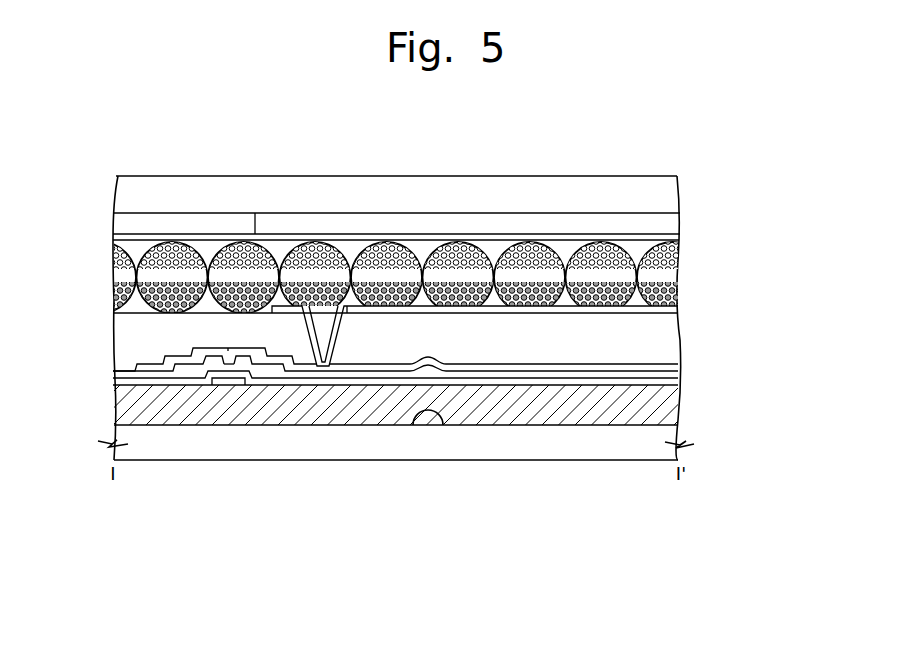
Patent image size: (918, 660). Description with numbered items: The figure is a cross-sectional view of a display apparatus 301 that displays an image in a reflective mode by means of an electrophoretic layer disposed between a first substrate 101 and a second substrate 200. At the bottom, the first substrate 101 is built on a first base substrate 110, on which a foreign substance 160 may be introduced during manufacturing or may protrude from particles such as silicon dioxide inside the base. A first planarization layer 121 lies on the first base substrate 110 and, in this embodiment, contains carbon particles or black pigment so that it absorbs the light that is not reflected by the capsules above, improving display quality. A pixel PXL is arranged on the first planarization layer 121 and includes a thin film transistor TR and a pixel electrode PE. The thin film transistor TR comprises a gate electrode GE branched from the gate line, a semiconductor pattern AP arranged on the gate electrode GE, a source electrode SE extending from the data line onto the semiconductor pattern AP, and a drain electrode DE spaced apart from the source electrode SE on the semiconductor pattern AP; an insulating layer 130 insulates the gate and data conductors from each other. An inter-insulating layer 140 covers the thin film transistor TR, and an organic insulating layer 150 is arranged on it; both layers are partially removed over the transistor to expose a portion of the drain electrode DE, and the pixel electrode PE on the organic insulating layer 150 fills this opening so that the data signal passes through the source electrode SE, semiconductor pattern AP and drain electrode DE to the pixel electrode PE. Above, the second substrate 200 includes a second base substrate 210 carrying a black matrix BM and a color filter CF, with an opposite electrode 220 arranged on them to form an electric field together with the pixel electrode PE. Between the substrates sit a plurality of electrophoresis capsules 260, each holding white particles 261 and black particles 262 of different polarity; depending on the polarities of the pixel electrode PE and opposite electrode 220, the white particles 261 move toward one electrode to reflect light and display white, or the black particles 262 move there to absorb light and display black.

The second base substrate 210 is at (668, 187).
The color filter CF is at (667, 223).
The black matrix BM is at (125, 222).
The opposite electrode 220 is at (668, 238).
The second substrate 200 is at (757, 182).
The electrophoresis capsules 260 is at (757, 257).
The white particles 261 is at (677, 259).
The black particles 262 is at (677, 292).
The display apparatus 301 is at (812, 202).
The organic insulating layer 150 is at (668, 325).
The inter-insulating layer 140 is at (672, 370).
The insulating layer 130 is at (672, 378).
The first planarization layer 121 is at (668, 408).
The first base substrate 110 is at (668, 436).
The first substrate 101 is at (757, 312).
The foreign substance 160 is at (428, 426).
The source electrode SE is at (163, 373).
The semiconductor pattern AP is at (190, 373).
The gate electrode GE is at (228, 385).
The drain electrode DE is at (267, 365).
The pixel electrode PE is at (321, 367).
The thin film transistor TR is at (147, 513).
The pixel PXL is at (347, 552).